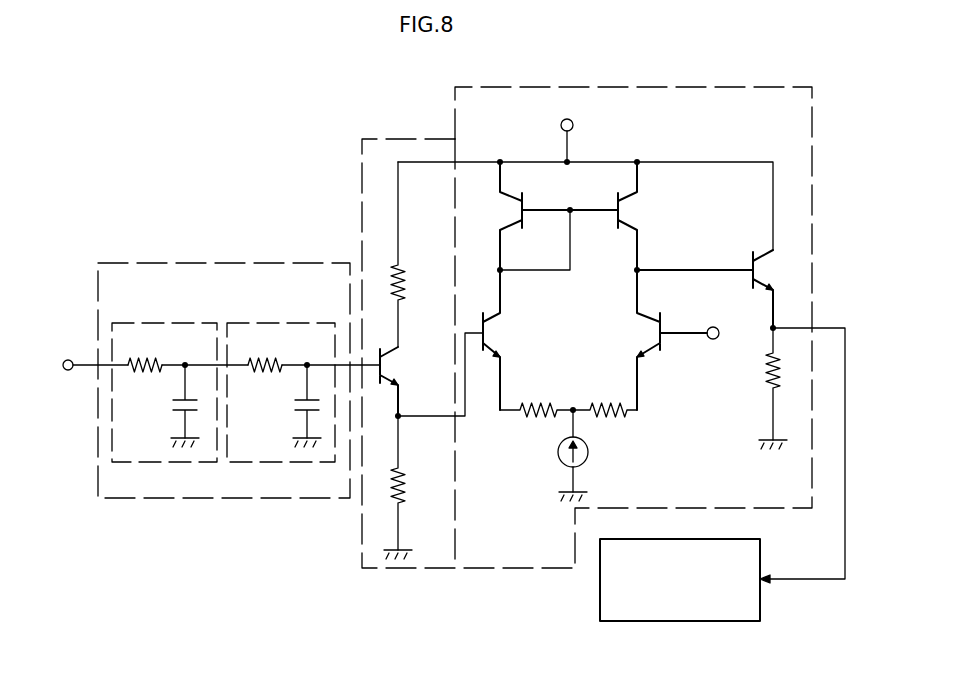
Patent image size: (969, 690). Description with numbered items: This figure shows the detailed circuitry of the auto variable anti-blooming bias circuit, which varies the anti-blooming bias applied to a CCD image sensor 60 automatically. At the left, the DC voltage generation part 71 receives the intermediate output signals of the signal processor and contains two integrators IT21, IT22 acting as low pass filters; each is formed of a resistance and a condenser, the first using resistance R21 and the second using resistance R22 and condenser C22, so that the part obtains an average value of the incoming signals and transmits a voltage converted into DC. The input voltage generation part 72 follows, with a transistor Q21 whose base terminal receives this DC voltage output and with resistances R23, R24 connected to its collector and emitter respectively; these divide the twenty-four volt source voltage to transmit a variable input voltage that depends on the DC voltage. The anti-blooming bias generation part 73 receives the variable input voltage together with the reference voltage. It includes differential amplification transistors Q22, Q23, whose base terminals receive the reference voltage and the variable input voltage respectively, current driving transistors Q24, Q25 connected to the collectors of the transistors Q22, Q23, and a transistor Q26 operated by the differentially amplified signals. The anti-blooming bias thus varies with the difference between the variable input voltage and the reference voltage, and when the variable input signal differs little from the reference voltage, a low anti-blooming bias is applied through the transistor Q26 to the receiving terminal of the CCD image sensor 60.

The CCD image sensor 60 is at (600, 586).
The DC voltage generation part 71 is at (218, 262).
The input voltage generation part 72 is at (362, 186).
The anti-blooming bias generation part 73 is at (455, 100).
The integrator IT21 is at (159, 323).
The integrator IT22 is at (283, 323).
The resistance R21 is at (148, 352).
The resistance R22 is at (266, 352).
The condenser C22 is at (225, 404).
The resistance R23 is at (421, 254).
The resistance R24 is at (419, 487).
The transistor Q21 is at (414, 375).
The differential amplification transistor Q22 is at (664, 340).
The differential amplification transistor Q23 is at (514, 340).
The current driving transistor Q24 is at (627, 216).
The current driving transistor Q25 is at (516, 216).
The transistor Q26 is at (724, 349).